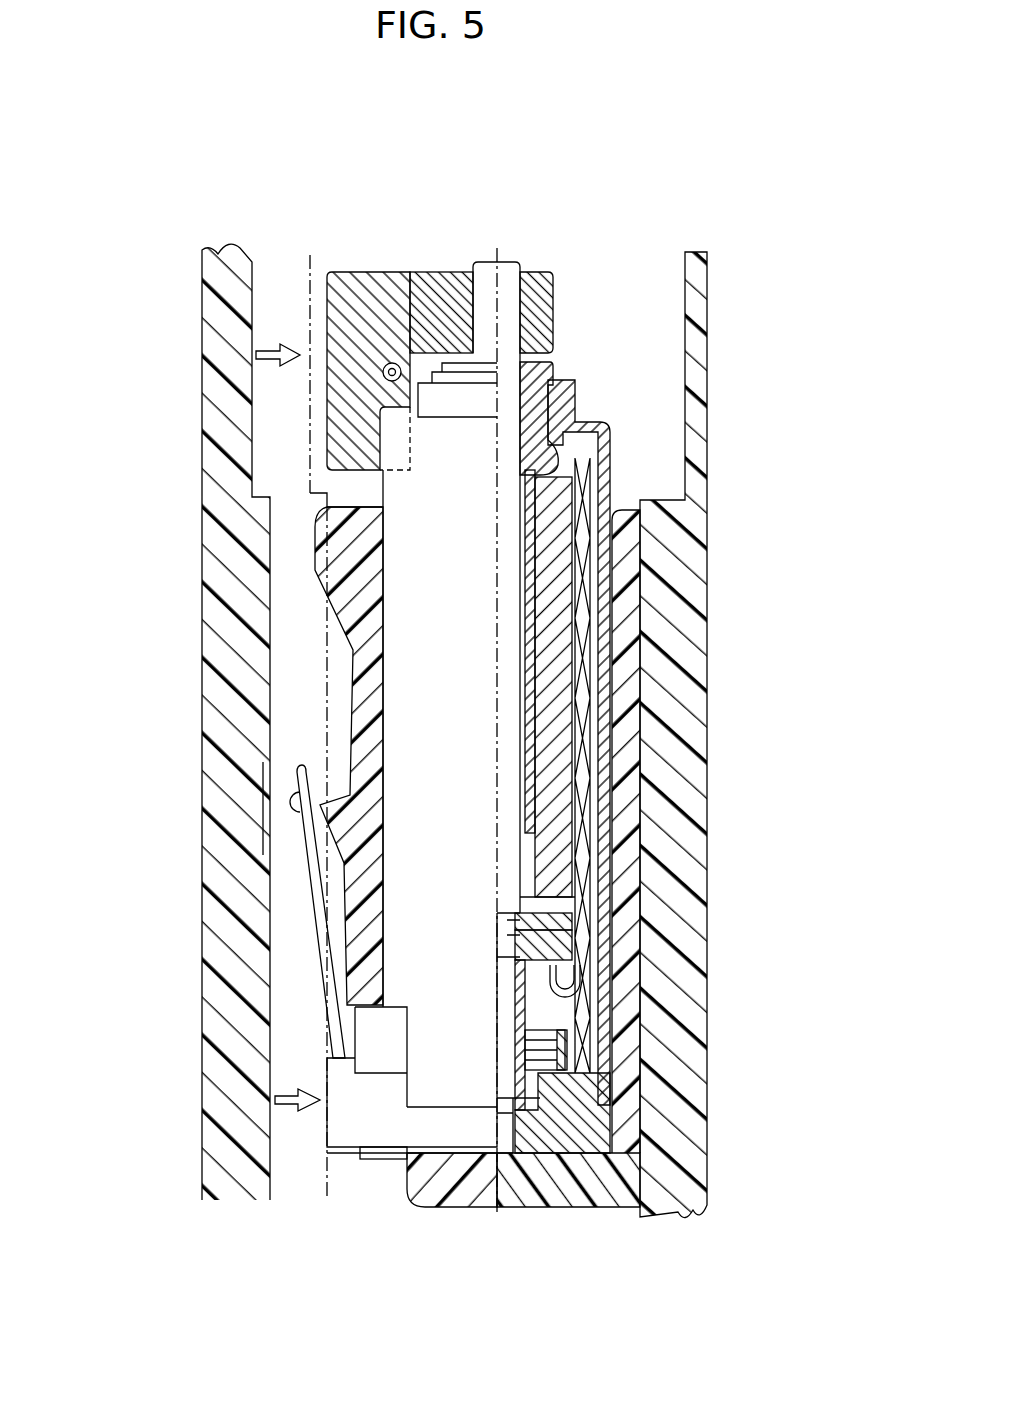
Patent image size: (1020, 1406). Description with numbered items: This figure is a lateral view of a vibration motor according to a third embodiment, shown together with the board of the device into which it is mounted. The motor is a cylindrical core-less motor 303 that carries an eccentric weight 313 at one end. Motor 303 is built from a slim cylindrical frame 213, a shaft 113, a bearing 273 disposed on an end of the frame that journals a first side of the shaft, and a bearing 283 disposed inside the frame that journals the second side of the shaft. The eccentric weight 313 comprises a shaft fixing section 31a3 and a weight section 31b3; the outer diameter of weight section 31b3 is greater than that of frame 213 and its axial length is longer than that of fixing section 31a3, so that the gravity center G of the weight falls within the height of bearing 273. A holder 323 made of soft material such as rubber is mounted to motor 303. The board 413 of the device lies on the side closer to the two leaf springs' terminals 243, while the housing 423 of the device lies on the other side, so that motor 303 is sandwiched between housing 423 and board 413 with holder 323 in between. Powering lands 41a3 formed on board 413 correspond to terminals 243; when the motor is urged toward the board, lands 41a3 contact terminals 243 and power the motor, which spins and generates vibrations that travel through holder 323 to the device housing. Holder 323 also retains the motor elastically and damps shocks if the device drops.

The shaft 113 is at (510, 273).
The eccentric weight 313 is at (410, 296).
The weight section 31b3 is at (363, 283).
The shaft fixing section 31a3 is at (450, 293).
The bearing 273 is at (555, 367).
The frame 213 is at (607, 483).
The holder 323 is at (355, 600).
The core-less motor 303 is at (410, 693).
The powering lands 41a3 is at (275, 803).
The leaf springs' terminals 243 is at (304, 862).
The board 413 is at (245, 975).
The bearing 283 is at (530, 855).
The housing 423 is at (683, 973).